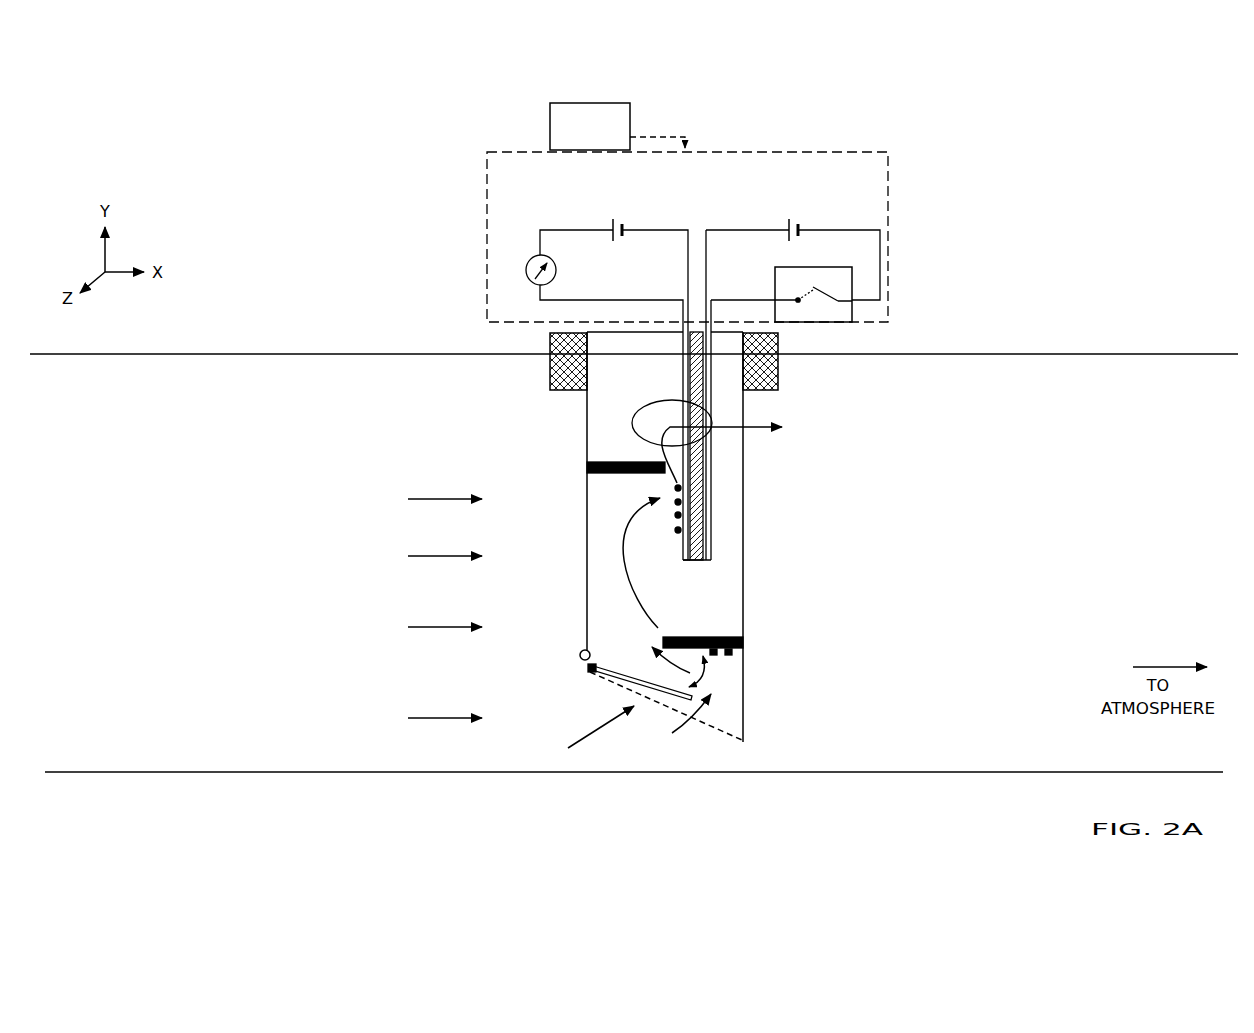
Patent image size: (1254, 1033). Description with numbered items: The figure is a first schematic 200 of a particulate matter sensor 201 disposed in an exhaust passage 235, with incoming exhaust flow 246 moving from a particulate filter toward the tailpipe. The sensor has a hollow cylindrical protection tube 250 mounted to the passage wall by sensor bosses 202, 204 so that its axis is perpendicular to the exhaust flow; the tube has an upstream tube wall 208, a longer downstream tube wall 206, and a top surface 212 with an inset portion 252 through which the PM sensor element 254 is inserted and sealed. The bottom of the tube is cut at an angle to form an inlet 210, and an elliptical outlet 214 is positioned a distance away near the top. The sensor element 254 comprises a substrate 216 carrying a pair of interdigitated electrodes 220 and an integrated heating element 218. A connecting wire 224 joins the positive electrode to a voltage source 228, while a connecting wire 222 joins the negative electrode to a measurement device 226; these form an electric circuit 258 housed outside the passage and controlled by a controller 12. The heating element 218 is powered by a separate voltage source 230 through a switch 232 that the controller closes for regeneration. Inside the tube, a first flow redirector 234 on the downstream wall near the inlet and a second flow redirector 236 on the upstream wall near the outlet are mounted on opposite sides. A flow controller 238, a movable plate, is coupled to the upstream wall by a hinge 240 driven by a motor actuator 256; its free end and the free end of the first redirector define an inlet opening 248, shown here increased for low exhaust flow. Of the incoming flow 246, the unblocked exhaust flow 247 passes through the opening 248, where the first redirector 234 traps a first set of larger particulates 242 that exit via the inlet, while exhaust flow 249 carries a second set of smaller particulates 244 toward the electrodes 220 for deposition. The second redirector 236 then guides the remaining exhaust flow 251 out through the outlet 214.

The controller 12 is at (617, 126).
The first schematic 200 is at (1162, 142).
The particulate matter sensor 201 is at (424, 229).
The sensor boss 202 is at (551, 368).
The sensor boss 204 is at (778, 368).
The downstream tube wall 206 is at (743, 518).
The upstream tube wall 208 is at (587, 527).
The inlet 210 is at (615, 690).
The top surface 212 is at (598, 332).
The outlet 214 is at (649, 410).
The substrate 216 is at (693, 560).
The heating element 218 is at (711, 467).
The interdigitated electrodes 220 is at (683, 555).
The connecting wire 222 is at (662, 299).
The connecting wires 224 is at (686, 228).
The measurement device 226 is at (527, 262).
The voltage source 228 is at (610, 216).
The voltage source 230 is at (787, 221).
The switch 232 is at (772, 279).
The first flow redirector 234 is at (687, 638).
The exhaust passage 235 is at (1170, 353).
The second flow redirector 236 is at (598, 462).
The flow controller 238 is at (615, 683).
The hinge 240 is at (586, 670).
The first set of particulates 242 is at (733, 656).
The second set of particulates 244 is at (675, 524).
The incoming exhaust flow 246 is at (437, 556).
The exhaust flow 247 is at (672, 733).
The inlet opening 248 is at (708, 668).
The exhaust flow 249 is at (641, 596).
The protection tube 250 is at (806, 604).
The exhaust flow 251 is at (765, 433).
The inset portion 252 is at (677, 320).
The PM sensor element 254 is at (716, 544).
The motor actuator 256 is at (580, 655).
The electric circuit 258 is at (481, 150).